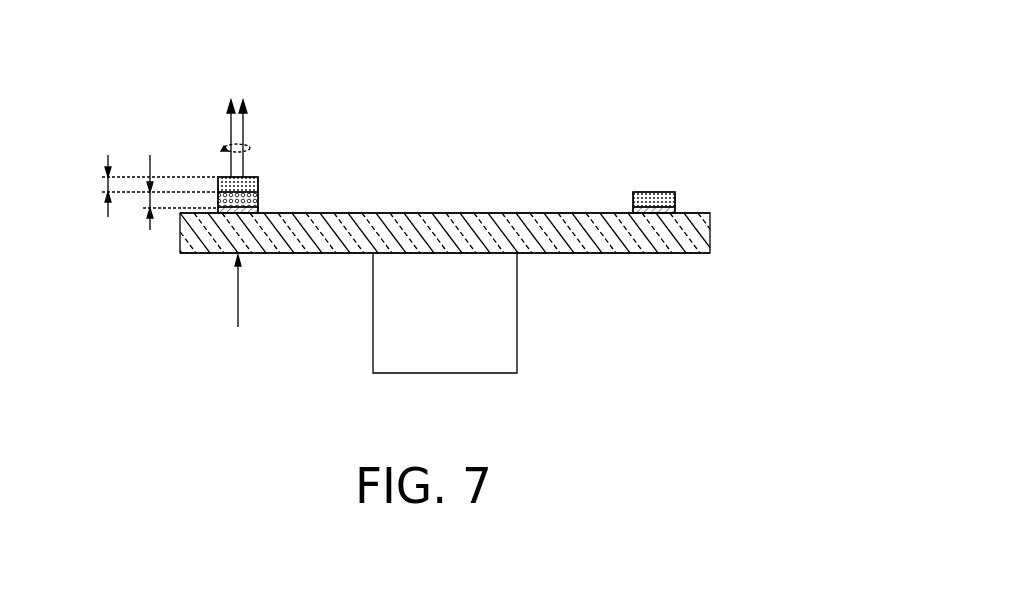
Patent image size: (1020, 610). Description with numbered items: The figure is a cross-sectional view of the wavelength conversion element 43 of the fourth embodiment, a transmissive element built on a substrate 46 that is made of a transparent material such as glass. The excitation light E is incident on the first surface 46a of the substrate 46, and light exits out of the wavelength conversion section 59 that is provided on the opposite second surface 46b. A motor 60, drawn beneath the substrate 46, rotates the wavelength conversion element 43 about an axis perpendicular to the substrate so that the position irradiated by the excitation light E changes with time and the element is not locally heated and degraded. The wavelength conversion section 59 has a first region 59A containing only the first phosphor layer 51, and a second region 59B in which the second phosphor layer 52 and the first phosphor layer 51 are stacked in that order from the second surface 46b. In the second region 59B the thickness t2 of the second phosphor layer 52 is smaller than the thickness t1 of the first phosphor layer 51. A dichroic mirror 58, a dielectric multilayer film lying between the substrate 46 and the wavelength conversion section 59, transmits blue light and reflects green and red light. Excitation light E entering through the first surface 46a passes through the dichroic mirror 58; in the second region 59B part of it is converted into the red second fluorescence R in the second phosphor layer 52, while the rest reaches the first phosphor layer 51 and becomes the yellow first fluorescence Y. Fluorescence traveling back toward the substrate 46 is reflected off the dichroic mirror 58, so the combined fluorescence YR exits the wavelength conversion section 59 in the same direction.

The wavelength conversion element 43 is at (433, 158).
The substrate 46 is at (700, 232).
The first surface 46a is at (683, 255).
The second surface 46b is at (528, 213).
The first phosphor layer 51 is at (257, 185).
The second phosphor layer 52 is at (257, 196).
The dichroic mirror 58 is at (257, 210).
The wavelength conversion section 59 is at (475, 195).
The first region 59A is at (643, 182).
The second region 59B is at (223, 126).
The motor 60 is at (508, 327).
The excitation light E is at (238, 317).
The second fluorescence R is at (231, 126).
The first fluorescence Y is at (243, 126).
The first and second fluorescence YR is at (250, 148).
The thickness of the first phosphor layer t1 is at (156, 172).
The thickness of the second phosphor layer t2 is at (178, 178).